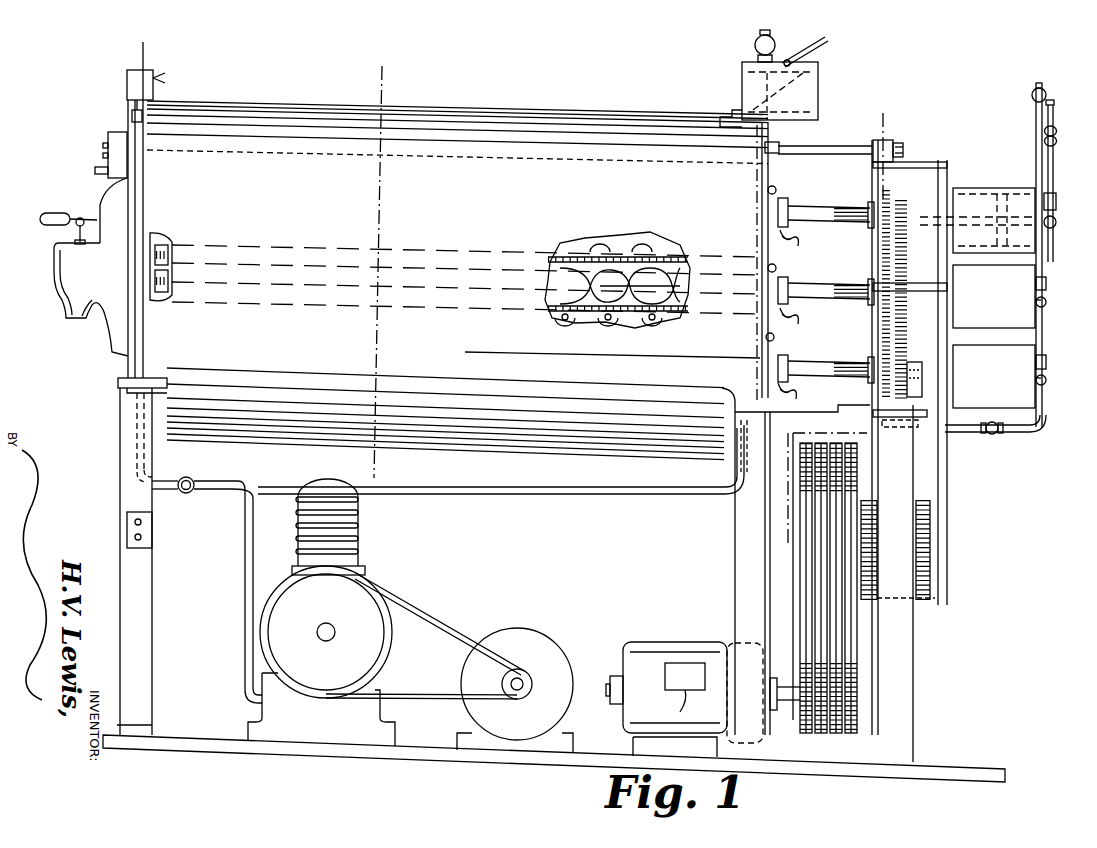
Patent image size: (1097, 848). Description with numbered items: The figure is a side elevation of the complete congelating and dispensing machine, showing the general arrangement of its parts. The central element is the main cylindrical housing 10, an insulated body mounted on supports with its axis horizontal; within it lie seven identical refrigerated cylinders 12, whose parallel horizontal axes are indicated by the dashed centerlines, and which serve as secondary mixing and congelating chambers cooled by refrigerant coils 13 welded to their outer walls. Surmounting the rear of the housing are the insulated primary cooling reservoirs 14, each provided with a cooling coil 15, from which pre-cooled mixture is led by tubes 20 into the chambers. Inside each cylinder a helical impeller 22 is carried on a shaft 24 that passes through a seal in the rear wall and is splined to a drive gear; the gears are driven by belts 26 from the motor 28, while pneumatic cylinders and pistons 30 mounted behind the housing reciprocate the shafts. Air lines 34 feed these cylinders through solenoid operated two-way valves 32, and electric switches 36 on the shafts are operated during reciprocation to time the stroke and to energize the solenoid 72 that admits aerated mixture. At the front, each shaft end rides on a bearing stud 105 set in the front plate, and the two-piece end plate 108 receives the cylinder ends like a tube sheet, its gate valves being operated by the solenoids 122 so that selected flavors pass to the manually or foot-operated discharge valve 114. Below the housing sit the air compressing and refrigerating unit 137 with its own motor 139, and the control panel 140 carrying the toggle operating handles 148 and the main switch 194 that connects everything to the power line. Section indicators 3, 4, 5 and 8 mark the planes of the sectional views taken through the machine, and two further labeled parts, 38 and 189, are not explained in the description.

The section line 3- 3 is at (396, 82).
The section line 4- 4 is at (896, 132).
The section line 5- 5 is at (762, 102).
The section line 8-8 / supply pipe 8 is at (160, 51).
The main cylindrical housing 10 is at (548, 247).
The refrigerated cylinder 12 is at (644, 230).
The refrigerant coil 13 is at (656, 323).
The primary cooling reservoir 14 is at (820, 70).
The cooling coil 15 is at (818, 100).
The tube 20 is at (780, 164).
The helical blade impeller 22 is at (670, 304).
The impeller shaft 24 is at (172, 291).
The belt 26 is at (856, 655).
The motor 28 is at (688, 642).
The pneumatic cylinder and piston 30 is at (998, 190).
The solenoid operated two-way valve 32 is at (1056, 222).
The air line 34 is at (1054, 171).
The electric switch 36 is at (800, 238).
The shield 38 is at (792, 588).
The solenoid 72 is at (768, 190).
The bearing stud 105 is at (150, 266).
The end plate 108 is at (135, 124).
The discharge valve 114 is at (65, 266).
The solenoid 122 is at (128, 86).
The air compressing and refrigerating unit 137 is at (358, 553).
The motor 139 is at (566, 650).
The control panel 140 is at (118, 142).
The operating handle 148 is at (95, 171).
The pressure gauge 189 is at (791, 48).
The main switch 194 is at (155, 533).